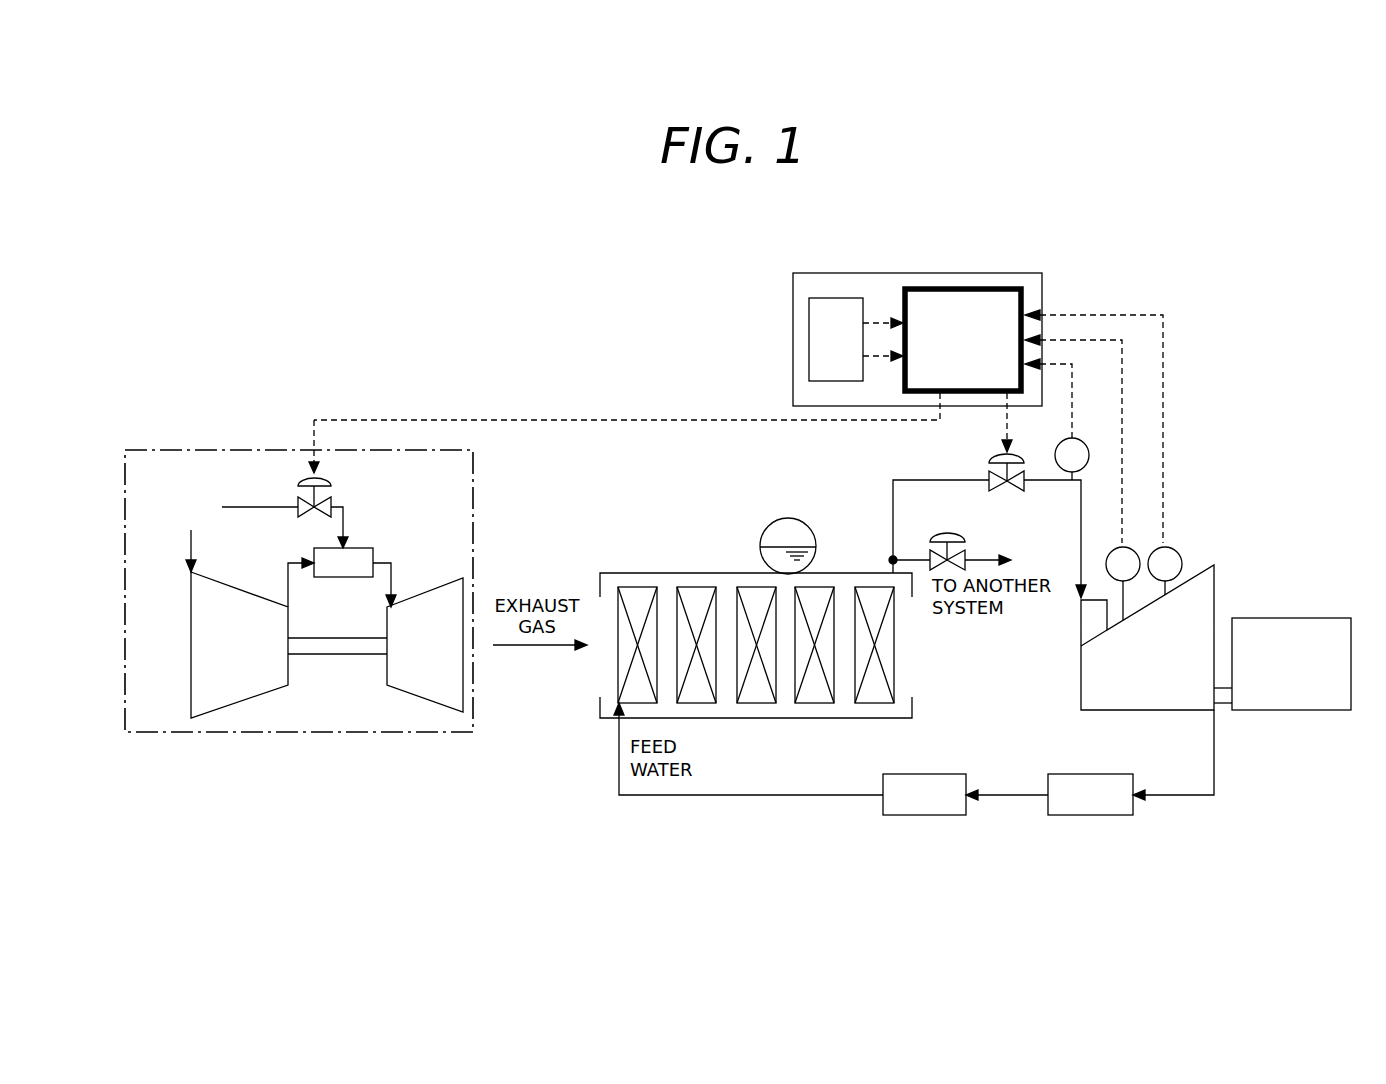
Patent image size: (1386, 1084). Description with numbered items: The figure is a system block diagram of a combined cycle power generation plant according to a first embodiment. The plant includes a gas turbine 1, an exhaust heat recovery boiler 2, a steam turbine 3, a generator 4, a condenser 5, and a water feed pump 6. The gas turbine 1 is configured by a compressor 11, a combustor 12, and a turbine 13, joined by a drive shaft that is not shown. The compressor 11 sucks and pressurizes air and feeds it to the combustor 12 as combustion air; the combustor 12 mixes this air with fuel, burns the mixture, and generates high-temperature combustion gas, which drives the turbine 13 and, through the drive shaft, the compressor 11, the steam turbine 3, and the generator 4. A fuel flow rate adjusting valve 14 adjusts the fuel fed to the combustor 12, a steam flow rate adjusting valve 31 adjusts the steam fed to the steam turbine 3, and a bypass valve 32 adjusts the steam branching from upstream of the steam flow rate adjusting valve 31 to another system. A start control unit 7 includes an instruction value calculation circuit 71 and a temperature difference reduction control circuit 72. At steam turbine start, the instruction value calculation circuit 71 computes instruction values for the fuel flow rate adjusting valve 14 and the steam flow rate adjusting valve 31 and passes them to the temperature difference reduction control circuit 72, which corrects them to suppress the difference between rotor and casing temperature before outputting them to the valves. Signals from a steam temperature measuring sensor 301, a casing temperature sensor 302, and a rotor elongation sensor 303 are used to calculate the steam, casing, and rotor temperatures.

The gas turbine 1 is at (413, 732).
The compressor 11 is at (258, 687).
The combustor 12 is at (358, 553).
The turbine 13 is at (430, 597).
The fuel flow rate adjusting valve 14 is at (328, 502).
The exhaust heat recovery boiler 2 is at (792, 718).
The steam turbine 3 is at (1146, 703).
The generator 4 is at (1291, 705).
The condenser 5 is at (1105, 815).
The water feed pump 6 is at (930, 815).
The start control unit 7 is at (793, 288).
The instruction value calculation circuit 71 is at (840, 305).
The temperature difference reduction control circuit 72 is at (978, 300).
The steam flow rate adjusting valve 31 is at (990, 458).
The bypass valve 32 is at (963, 538).
The steam temperature measuring sensor 301 is at (1087, 447).
The casing temperature sensor 302 is at (1132, 552).
The rotor elongation sensor 303 is at (1179, 553).